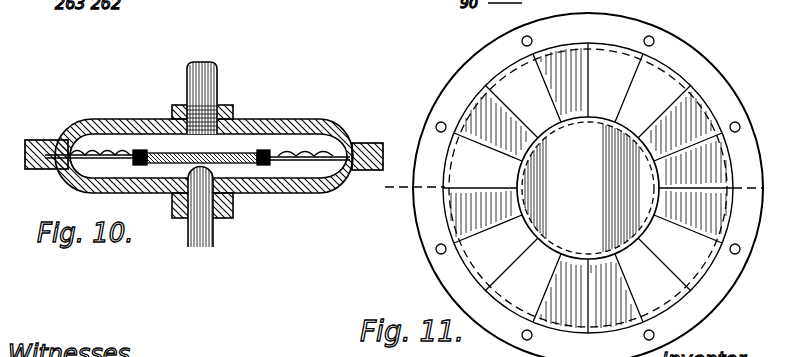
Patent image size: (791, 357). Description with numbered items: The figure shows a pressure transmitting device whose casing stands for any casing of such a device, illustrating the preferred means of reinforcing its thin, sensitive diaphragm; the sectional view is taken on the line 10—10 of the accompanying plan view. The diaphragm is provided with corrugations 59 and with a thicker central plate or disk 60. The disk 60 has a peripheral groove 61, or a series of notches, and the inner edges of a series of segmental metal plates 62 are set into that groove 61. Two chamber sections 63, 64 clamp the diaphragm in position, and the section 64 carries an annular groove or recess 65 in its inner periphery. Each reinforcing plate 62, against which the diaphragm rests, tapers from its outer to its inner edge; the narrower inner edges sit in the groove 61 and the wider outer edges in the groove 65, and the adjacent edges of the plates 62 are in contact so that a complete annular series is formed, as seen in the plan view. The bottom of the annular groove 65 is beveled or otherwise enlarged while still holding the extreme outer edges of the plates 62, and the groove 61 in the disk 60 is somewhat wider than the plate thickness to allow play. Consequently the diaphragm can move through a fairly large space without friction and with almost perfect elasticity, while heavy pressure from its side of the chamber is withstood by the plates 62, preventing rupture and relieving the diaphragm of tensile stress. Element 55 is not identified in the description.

In FIG. 11, the section line 10 is at (572, 187).
In FIG. 10, the valve stem 55 is at (310, 148).
In FIG. 10, the corrugations 59 is at (286, 152).
In FIG. 10, the central plate or disk 60 is at (202, 109).
In FIG. 11, the central plate or disk 60 is at (588, 188).
In FIG. 10, the peripheral groove 61 is at (147, 156).
In FIG. 11, the peripheral groove 61 is at (518, 165).
In FIG. 10, the segmental metal plates 62 is at (112, 150).
In FIG. 11, the segmental metal plates 62 is at (588, 188).
In FIG. 10, the chamber section 63 is at (128, 146).
In FIG. 10, the chamber section 64 is at (277, 177).
In FIG. 11, the chamber section 64 is at (693, 72).
In FIG. 10, the annular groove or recess 65 is at (343, 180).